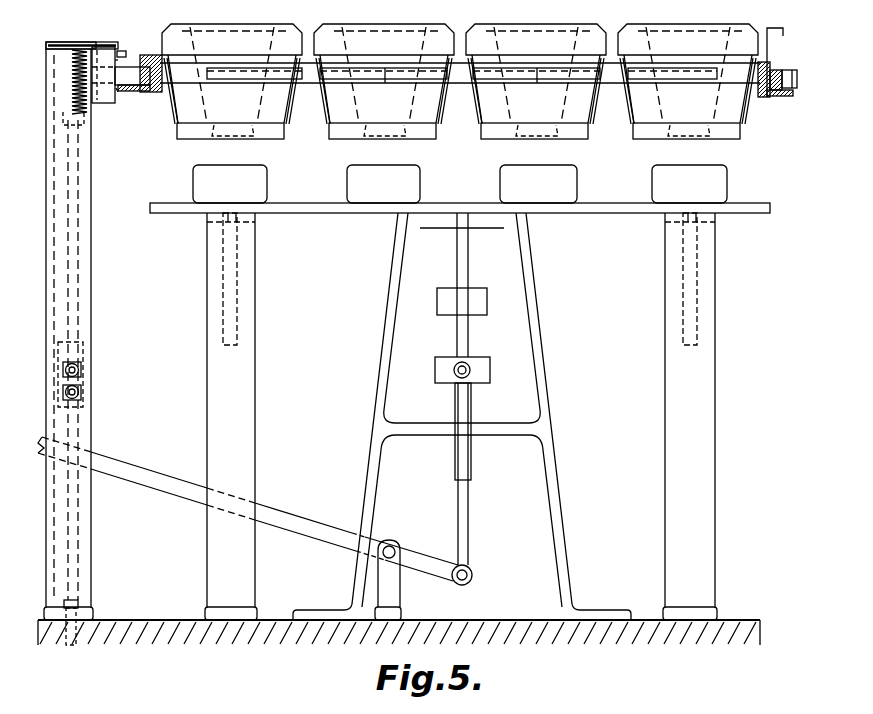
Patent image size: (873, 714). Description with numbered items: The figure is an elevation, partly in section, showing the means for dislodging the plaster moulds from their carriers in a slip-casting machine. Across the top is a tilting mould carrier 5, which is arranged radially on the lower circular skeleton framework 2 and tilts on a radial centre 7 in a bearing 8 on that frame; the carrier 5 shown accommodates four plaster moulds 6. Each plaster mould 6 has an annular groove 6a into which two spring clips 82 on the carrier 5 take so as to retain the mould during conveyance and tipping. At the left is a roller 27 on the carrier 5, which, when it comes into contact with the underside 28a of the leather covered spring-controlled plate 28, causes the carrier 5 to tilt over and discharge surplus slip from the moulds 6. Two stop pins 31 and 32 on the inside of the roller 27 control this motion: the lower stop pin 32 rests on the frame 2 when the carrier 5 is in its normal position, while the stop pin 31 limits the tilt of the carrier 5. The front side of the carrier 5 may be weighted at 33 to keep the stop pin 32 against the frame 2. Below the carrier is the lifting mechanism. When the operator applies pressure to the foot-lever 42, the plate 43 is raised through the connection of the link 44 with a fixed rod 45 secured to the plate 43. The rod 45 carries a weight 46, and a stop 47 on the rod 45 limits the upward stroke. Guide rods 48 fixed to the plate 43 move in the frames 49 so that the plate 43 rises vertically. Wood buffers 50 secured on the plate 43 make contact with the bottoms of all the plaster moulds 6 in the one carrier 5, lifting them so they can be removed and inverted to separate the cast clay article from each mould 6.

The skeleton framework 2 is at (141, 92).
The mould carrier 5 is at (464, 84).
The plaster mould 6 is at (286, 134).
The annular groove 6a is at (455, 149).
The radial centre 7 is at (128, 70).
The bearing 8 is at (148, 56).
The roller 27 is at (103, 103).
The spring-controlled plate 28 is at (89, 45).
The underside of spring-controlled plate 28a is at (70, 33).
The stop pin 31 is at (122, 51).
The stop pin 32 is at (117, 90).
The weight 33 is at (410, 81).
The foot-lever 42 is at (104, 459).
The plate 43 is at (309, 214).
The link 44 is at (472, 498).
The fixed rod 45 is at (469, 268).
The weight 46 is at (435, 370).
The stop 47 is at (437, 303).
The guide rod 48 is at (240, 322).
The frame 49 is at (256, 421).
The wood buffer 50 is at (460, 184).
The spring clip 82 is at (294, 104).